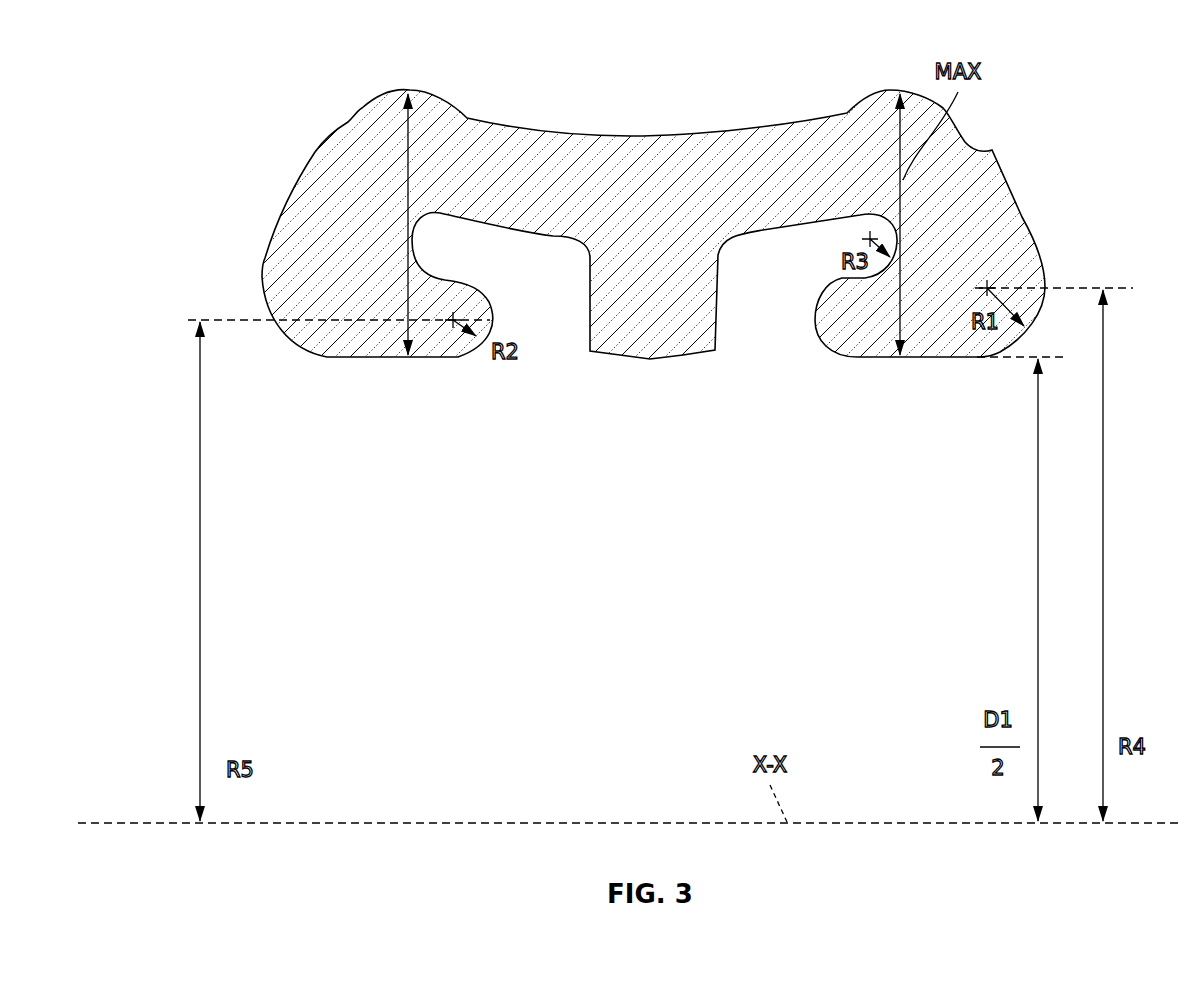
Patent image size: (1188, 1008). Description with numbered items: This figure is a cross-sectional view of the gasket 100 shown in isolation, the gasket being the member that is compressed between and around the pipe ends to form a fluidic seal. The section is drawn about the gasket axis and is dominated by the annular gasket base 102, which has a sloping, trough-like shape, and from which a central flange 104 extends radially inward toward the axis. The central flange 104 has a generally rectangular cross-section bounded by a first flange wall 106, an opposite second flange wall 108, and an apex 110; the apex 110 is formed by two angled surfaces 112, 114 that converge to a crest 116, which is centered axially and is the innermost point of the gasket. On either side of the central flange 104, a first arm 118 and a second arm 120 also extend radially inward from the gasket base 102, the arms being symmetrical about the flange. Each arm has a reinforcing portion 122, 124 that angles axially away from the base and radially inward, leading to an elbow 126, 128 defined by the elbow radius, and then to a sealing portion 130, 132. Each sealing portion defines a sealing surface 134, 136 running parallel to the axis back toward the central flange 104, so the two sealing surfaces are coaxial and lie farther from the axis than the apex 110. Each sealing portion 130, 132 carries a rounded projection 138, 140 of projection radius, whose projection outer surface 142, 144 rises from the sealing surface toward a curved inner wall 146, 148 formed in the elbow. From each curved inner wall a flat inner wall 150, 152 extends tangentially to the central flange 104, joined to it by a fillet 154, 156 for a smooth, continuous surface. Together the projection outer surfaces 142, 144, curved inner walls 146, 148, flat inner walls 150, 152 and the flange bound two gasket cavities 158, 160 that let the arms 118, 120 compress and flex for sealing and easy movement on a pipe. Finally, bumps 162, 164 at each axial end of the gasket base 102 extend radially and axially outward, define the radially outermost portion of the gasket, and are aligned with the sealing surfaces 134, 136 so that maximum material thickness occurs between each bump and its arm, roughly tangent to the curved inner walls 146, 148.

The gasket 100 is at (722, 111).
The gasket base 102 is at (588, 138).
The central flange 104 is at (598, 353).
The first flange wall 106 is at (715, 330).
The second flange wall 108 is at (638, 288).
The apex 110 is at (637, 389).
The angled surface 112 is at (682, 355).
The angled surface 114 is at (620, 355).
The crest 116 is at (657, 363).
The first arm 118 is at (1042, 200).
The second arm 120 is at (281, 196).
The reinforcing portion 122 is at (969, 167).
The reinforcing portion 124 is at (329, 174).
The elbow 126 is at (1032, 267).
The elbow 128 is at (283, 297).
The sealing portion 130 is at (950, 337).
The sealing portion 132 is at (355, 333).
The sealing surface 134 is at (923, 360).
The sealing surface 136 is at (347, 358).
The projection 138 is at (838, 325).
The projection 140 is at (443, 338).
The projection outer surface 142 is at (816, 318).
The projection outer surface 144 is at (477, 288).
The curved inner wall 146 is at (877, 212).
The curved inner wall 148 is at (407, 246).
The flat inner wall 150 is at (765, 228).
The flat inner wall 152 is at (522, 227).
The fillet 154 is at (723, 253).
The fillet 156 is at (585, 250).
The gasket cavity 158 is at (742, 312).
The gasket cavity 160 is at (524, 272).
The bump 162 is at (905, 90).
The bump 164 is at (407, 88).